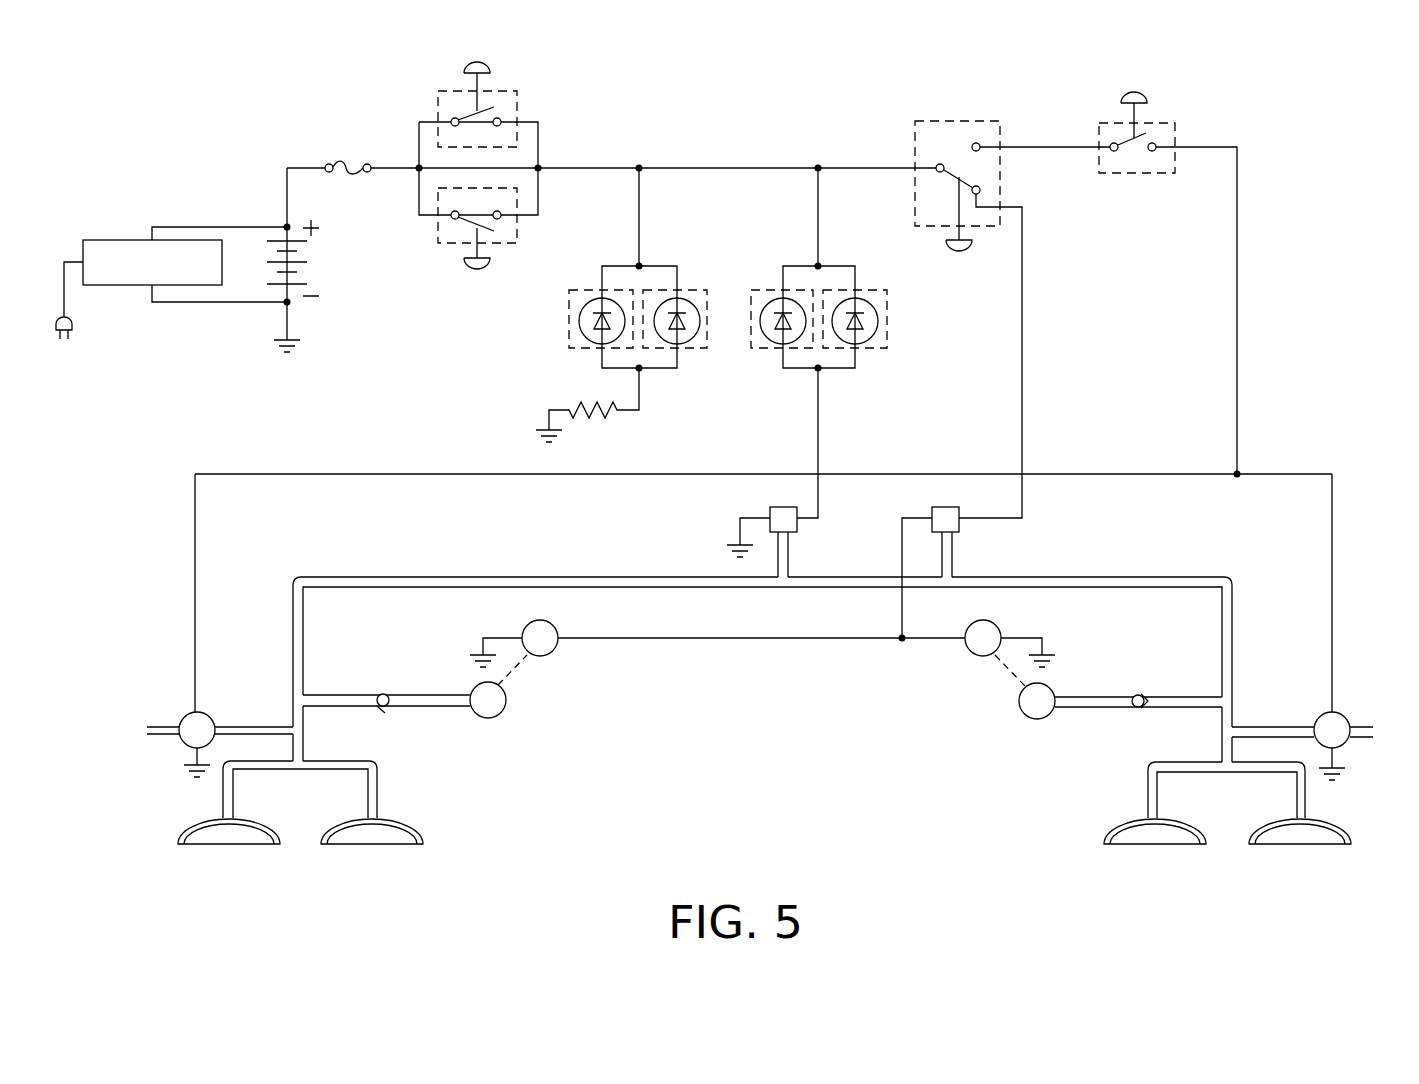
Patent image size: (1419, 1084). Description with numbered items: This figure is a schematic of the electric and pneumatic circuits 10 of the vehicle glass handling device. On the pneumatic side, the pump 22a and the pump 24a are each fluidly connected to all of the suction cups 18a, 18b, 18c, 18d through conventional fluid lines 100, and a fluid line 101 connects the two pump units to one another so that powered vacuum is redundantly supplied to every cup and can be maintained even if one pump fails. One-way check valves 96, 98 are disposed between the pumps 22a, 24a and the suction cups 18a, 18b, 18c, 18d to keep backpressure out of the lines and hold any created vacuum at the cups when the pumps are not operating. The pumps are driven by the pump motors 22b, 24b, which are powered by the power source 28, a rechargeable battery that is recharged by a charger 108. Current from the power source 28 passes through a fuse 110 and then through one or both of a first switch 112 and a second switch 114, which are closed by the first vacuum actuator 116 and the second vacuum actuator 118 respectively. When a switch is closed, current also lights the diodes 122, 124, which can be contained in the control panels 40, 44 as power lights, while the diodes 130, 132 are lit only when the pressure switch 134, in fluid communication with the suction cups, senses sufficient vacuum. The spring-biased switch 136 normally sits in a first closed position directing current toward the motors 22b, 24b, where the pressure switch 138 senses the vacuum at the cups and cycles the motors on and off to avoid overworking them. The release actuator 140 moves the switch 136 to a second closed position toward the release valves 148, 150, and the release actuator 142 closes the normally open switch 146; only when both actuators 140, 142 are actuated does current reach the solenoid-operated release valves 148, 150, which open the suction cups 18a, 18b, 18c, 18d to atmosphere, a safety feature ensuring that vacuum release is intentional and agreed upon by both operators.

The horn system 10 is at (1354, 150).
The suction cup 18a is at (218, 840).
The suction cup 18b is at (372, 840).
The suction cup 18c is at (1148, 840).
The suction cup 18d is at (1300, 840).
The pump 22a is at (502, 714).
The pump motor 22b is at (553, 655).
The pump 24a is at (1022, 714).
The pump motor 24b is at (975, 657).
The power source 28 is at (307, 264).
The control panel 40 is at (520, 237).
The control panel 44 is at (520, 100).
The one-way check valve 96 is at (387, 693).
The one-way check valve 98 is at (1137, 693).
The fluid line 100 is at (378, 788).
The fluid line 101 is at (697, 585).
The charger 108 is at (130, 240).
The fuse 110 is at (338, 163).
The first switch 112 is at (470, 222).
The second switch 114 is at (468, 113).
The first vacuum actuator 116 is at (477, 270).
The second vacuum actuator 118 is at (490, 66).
The diode 122 is at (585, 330).
The diode 124 is at (685, 345).
The diode 130 is at (766, 305).
The diode 132 is at (880, 330).
The pressure switch 134 is at (770, 510).
The switch 136 is at (955, 172).
The pressure switch 138 is at (958, 530).
The release actuator 140 is at (959, 252).
The release actuator 142 is at (1140, 93).
The switch 146 is at (1136, 151).
The release valve 148 is at (183, 715).
The release valve 150 is at (1345, 712).